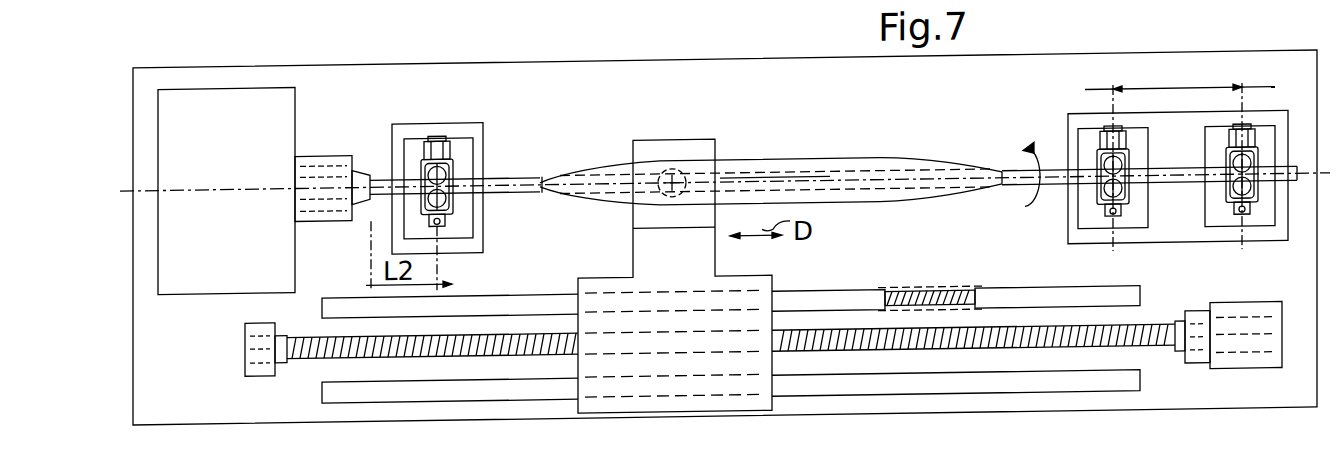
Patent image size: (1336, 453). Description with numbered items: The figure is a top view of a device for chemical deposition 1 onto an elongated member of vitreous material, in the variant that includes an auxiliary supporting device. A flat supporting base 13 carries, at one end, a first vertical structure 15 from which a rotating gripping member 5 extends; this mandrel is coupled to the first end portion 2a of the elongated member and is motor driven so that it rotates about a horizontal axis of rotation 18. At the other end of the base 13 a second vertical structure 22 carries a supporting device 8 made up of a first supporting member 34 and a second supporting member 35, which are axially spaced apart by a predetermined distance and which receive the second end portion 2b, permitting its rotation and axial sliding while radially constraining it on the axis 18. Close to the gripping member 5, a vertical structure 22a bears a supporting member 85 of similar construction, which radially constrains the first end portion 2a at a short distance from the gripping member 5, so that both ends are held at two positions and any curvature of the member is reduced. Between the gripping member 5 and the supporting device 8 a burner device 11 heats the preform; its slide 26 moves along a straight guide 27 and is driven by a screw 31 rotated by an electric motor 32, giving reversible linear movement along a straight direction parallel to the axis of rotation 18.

The device for chemical deposition 1 is at (785, 160).
The first end portion 2a is at (403, 189).
The second end portion 2b is at (1185, 187).
The rotating gripping member 5 is at (323, 158).
The supporting device 8 is at (1215, 87).
The burner device 11 is at (735, 163).
The flat supporting base 13 is at (621, 97).
The first vertical structure 15 is at (150, 226).
The horizontal axis of rotation 18 is at (500, 193).
The second vertical structure 22 is at (1165, 236).
The vertical structure 22a is at (480, 139).
The slide 26 is at (755, 291).
The straight guide 27 is at (366, 308).
The screw 31 is at (506, 360).
The electric motor 32 is at (1247, 337).
The first supporting member 34 is at (1113, 86).
The second supporting member 35 is at (1267, 88).
The supporting member 85 is at (452, 130).